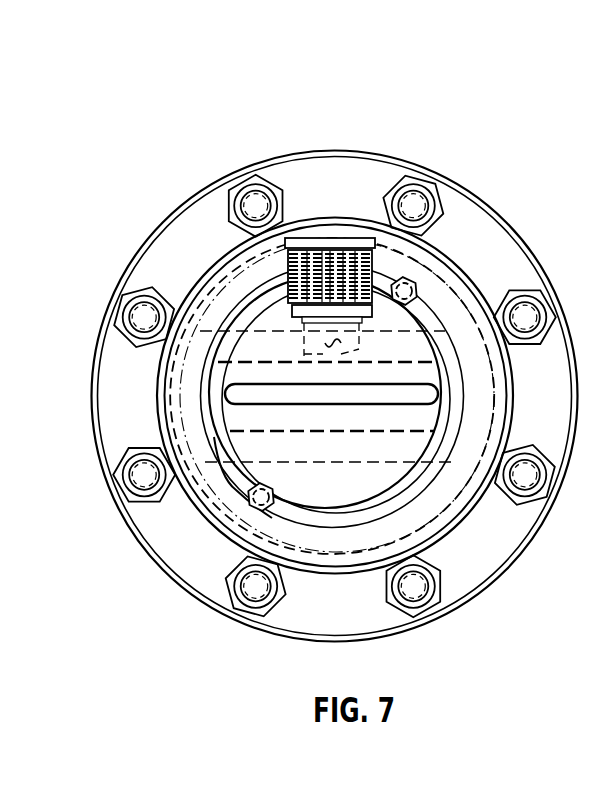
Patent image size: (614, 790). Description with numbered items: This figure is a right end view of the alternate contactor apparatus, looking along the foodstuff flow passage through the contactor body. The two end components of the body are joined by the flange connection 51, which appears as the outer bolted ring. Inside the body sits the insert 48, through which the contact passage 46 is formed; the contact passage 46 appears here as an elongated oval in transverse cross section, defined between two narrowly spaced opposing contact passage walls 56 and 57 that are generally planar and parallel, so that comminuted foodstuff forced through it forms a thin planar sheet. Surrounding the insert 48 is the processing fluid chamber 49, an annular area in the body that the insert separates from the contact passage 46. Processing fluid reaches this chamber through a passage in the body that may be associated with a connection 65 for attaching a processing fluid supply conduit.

The contact passage 46 is at (393, 363).
The insert 48 is at (243, 454).
The processing fluid chamber 49 is at (259, 337).
The flange connection 51 is at (335, 375).
The contact passage wall 56 is at (390, 310).
The contact passage wall 57 is at (398, 503).
The connection 65 is at (330, 268).